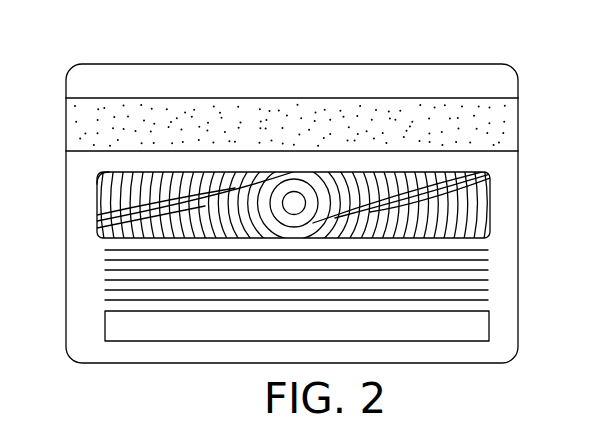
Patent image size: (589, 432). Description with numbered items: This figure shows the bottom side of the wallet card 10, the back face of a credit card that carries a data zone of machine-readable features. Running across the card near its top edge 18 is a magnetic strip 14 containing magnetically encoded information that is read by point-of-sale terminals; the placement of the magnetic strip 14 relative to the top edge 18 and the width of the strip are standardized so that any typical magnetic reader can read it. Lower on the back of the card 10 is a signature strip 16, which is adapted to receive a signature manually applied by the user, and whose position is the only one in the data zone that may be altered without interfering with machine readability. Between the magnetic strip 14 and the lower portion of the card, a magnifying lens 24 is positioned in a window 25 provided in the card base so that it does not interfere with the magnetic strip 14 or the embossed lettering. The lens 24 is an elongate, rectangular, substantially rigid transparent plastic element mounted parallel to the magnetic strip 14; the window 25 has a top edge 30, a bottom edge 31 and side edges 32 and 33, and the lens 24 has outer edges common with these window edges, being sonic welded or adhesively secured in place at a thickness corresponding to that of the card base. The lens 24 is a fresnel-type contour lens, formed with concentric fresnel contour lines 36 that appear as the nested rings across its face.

The card 10 is at (297, 199).
The magnetic strip 14 is at (507, 117).
The signature strip 16 is at (470, 323).
The top edge 18 is at (170, 65).
The magnifying lens 24 is at (490, 177).
The window 25 is at (98, 216).
The top edge 30 is at (247, 172).
The bottom edge 31 is at (453, 240).
The side edge 32 is at (490, 210).
The side edge 33 is at (97, 188).
The fresnel contour lines 36 is at (150, 226).